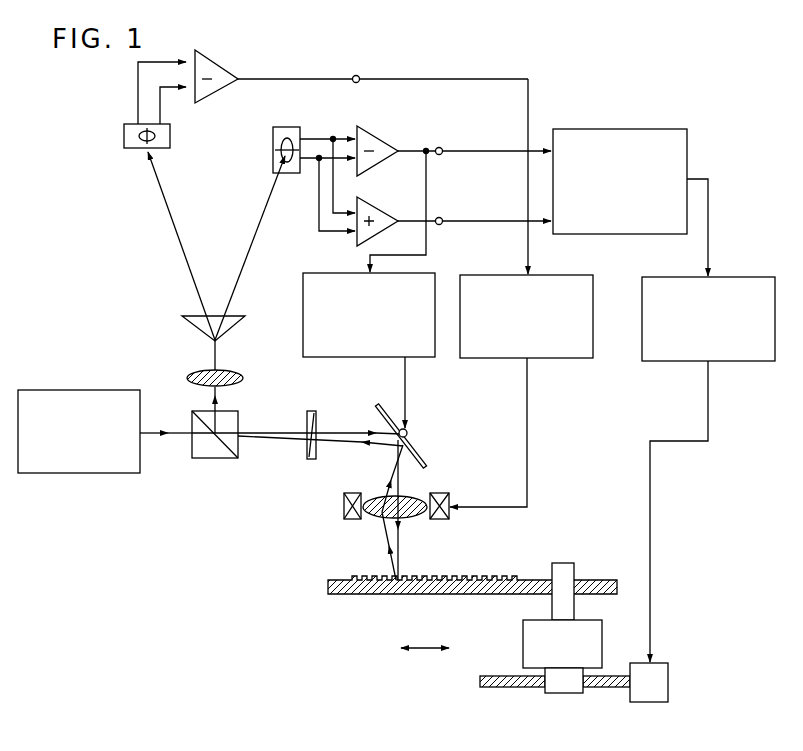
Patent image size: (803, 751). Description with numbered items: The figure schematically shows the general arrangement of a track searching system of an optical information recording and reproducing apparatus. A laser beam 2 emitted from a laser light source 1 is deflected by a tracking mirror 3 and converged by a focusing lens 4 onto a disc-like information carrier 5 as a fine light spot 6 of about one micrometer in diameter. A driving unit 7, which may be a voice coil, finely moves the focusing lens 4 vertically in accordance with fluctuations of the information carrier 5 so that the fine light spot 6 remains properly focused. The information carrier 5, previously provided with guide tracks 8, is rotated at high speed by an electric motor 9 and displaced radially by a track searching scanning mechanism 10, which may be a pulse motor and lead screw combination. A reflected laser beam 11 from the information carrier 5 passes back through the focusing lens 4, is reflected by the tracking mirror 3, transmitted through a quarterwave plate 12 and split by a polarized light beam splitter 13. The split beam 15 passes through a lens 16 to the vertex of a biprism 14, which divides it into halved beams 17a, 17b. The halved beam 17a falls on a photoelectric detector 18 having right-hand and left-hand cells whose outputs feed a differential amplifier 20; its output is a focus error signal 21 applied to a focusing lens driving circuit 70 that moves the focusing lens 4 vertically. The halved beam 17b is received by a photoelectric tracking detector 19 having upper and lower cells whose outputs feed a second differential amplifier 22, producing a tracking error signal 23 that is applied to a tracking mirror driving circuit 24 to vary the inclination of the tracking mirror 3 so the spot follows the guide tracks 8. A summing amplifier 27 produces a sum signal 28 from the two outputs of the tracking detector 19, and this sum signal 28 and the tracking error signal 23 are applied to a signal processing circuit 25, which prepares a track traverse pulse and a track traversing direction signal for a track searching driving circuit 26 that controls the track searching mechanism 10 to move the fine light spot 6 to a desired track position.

The laser light source 1 is at (113, 390).
The laser beam 2 is at (168, 441).
The tracking mirror 3 is at (378, 404).
The focusing lens 4 is at (408, 519).
The disc-like information carrier 5 is at (328, 589).
The fine light spot 6 is at (401, 580).
The driving unit 7 is at (446, 494).
The guide tracks 8 is at (475, 580).
The electric motor 9 is at (523, 637).
The track searching scanning mechanism 10 is at (653, 663).
The reflected laser beam 11 is at (378, 548).
The quarterwave plate 12 is at (310, 460).
The polarized light beam splitter 13 is at (232, 460).
The biprism 14 is at (240, 318).
The split beam 15 is at (208, 400).
The lens 16 is at (238, 382).
The halved beam 17a is at (176, 234).
The halved beam 17b is at (258, 236).
The photoelectric detector 18 is at (170, 133).
The photoelectric tracking detector 19 is at (285, 127).
The differential amplifier 20 is at (217, 73).
The focus error signal 21 is at (358, 76).
The second differential amplifier 22 is at (383, 146).
The tracking error signal 23 is at (441, 148).
The tracking mirror driving circuit 24 is at (347, 272).
The signal processing circuit 25 is at (644, 129).
The track searching driving circuit 26 is at (736, 277).
The summing amplifier 27 is at (383, 217).
The sum signal 28 is at (441, 218).
The focusing lens driving circuit 70 is at (551, 277).